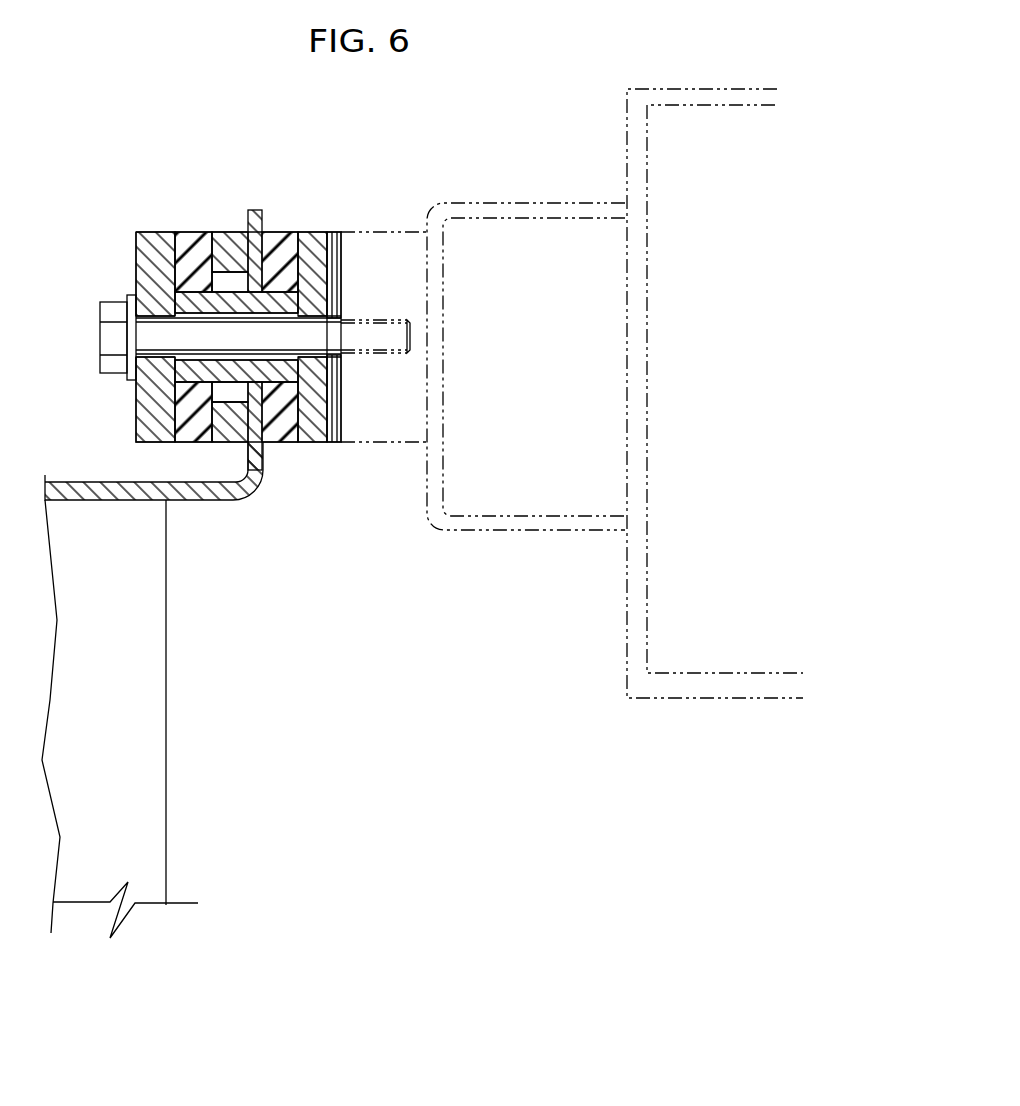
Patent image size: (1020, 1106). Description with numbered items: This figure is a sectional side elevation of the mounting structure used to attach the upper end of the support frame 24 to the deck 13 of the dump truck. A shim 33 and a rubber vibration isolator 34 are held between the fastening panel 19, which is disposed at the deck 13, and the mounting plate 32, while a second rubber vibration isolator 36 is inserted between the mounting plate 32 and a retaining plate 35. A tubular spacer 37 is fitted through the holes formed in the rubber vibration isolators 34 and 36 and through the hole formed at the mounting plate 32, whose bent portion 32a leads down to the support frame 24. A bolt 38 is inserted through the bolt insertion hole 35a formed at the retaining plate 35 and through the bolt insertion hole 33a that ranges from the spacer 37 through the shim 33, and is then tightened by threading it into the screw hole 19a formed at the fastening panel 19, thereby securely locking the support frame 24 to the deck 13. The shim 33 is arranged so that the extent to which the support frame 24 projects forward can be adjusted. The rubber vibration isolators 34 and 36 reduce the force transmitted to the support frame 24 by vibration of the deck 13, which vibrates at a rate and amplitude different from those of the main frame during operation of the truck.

The deck 13 is at (627, 593).
The fastening panel 19 is at (395, 232).
The screw hole 19a is at (410, 335).
The support frame 24 is at (147, 795).
The mounting plate 32 is at (202, 492).
The bent portion of bracket 32a is at (257, 395).
The shim 33 is at (318, 442).
The bolt insertion hole 33a is at (318, 305).
The rubber vibration isolator 34 is at (280, 243).
The retaining plate 35 is at (140, 262).
The bolt insertion hole 35a is at (133, 382).
The rubber vibration isolator 36 is at (180, 243).
The tubular spacer 37 is at (233, 300).
The bolt 38 is at (102, 322).